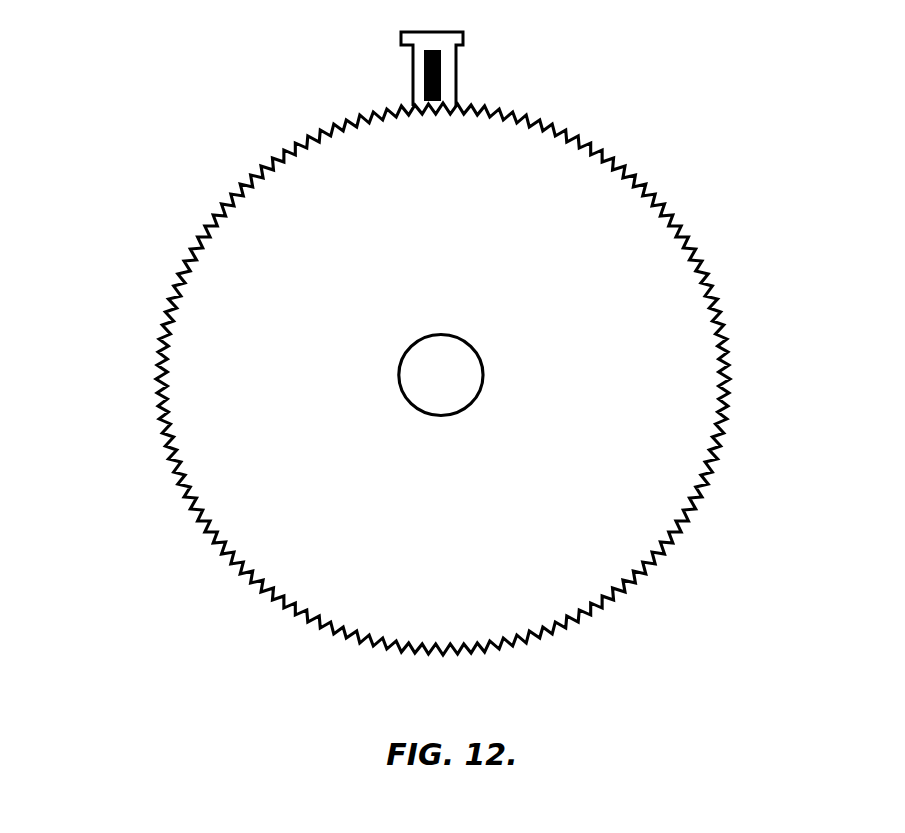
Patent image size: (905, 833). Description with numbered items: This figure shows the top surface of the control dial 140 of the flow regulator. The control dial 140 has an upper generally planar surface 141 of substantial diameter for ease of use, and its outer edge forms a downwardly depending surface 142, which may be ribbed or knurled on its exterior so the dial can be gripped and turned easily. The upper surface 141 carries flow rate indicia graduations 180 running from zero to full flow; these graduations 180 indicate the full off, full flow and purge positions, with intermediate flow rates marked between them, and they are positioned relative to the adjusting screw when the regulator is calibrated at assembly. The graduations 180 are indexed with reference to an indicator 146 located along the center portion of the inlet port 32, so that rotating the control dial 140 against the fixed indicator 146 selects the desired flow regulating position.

The control dial 140 is at (697, 208).
The upper generally planar surface 141 is at (670, 415).
The downwardly depending surface 142 is at (683, 518).
The indicator 146 is at (413, 75).
The inlet port 32 is at (456, 70).
The flow rate indicia graduations 180 is at (683, 322).